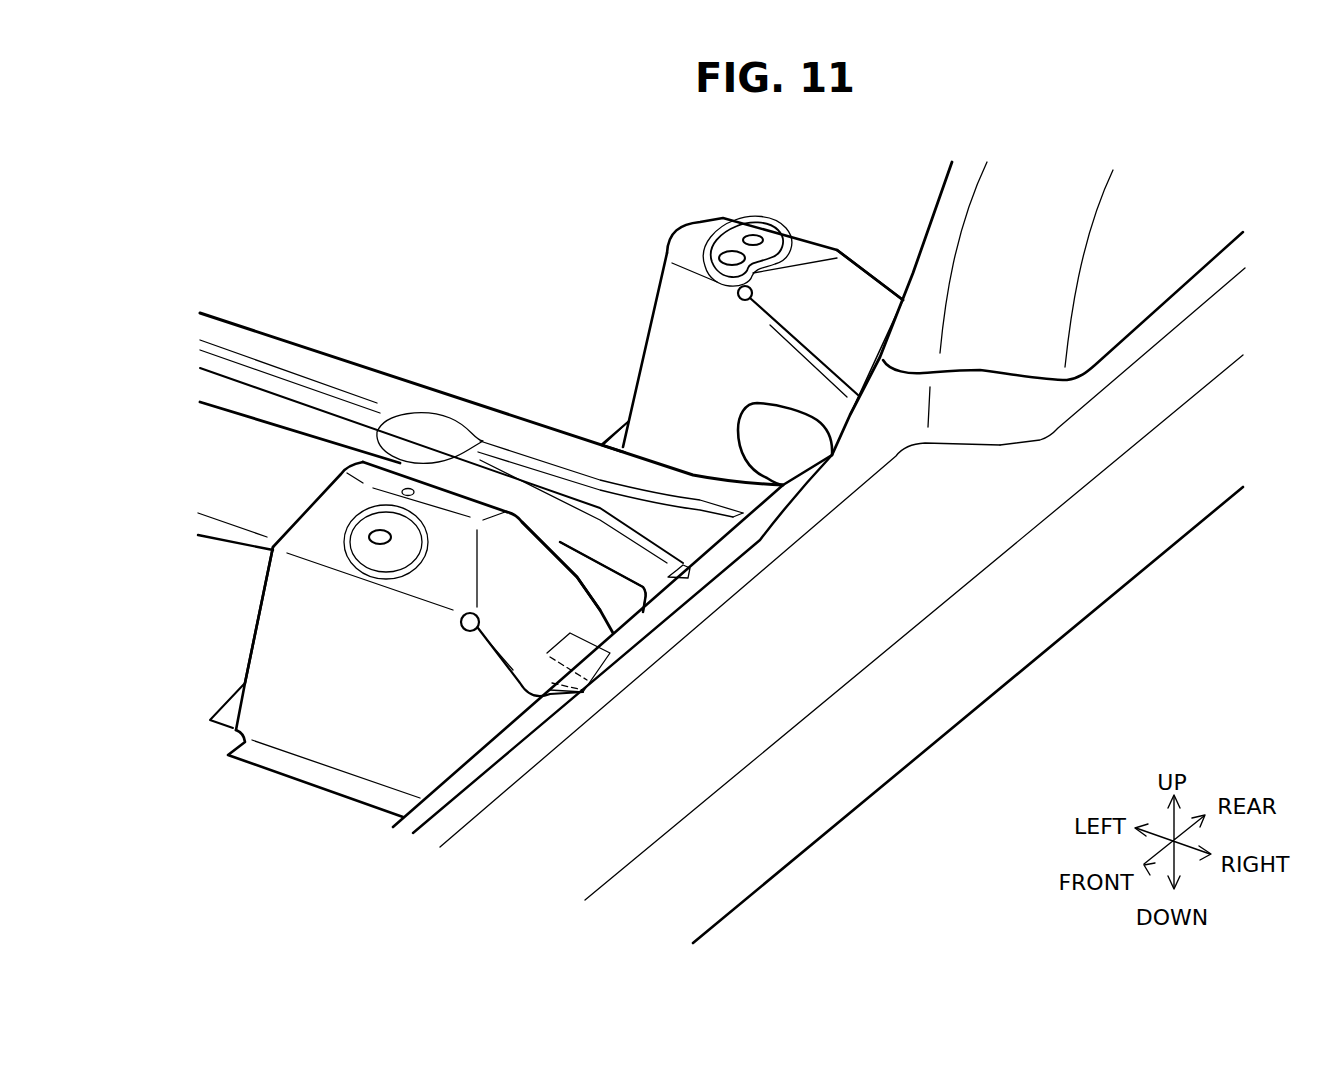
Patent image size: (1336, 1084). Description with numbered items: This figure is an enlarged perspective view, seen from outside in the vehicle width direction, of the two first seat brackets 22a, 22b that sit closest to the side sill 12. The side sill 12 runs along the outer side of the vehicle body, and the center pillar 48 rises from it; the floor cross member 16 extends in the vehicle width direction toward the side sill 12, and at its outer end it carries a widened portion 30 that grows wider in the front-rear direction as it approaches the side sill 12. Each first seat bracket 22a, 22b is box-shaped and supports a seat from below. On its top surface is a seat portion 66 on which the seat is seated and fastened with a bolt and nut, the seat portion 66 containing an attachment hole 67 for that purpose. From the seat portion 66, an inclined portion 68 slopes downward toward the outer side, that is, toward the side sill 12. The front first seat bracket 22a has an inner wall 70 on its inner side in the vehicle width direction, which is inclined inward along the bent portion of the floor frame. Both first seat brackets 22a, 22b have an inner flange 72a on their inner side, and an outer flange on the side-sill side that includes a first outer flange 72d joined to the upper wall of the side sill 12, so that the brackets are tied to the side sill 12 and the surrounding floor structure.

The side sill 12 is at (1068, 652).
The floor cross member 16 is at (333, 333).
The first seat bracket 22a is at (260, 790).
The first seat bracket 22b is at (632, 268).
The widened portion 30 is at (600, 582).
The center pillar 48 is at (930, 193).
The seat portion 66 is at (327, 520).
The attachment hole 67 is at (385, 533).
The inclined portion 68 is at (527, 593).
The inner wall 70 is at (257, 623).
The inner flange 72a is at (243, 690).
The first outer flange 72d is at (555, 588).